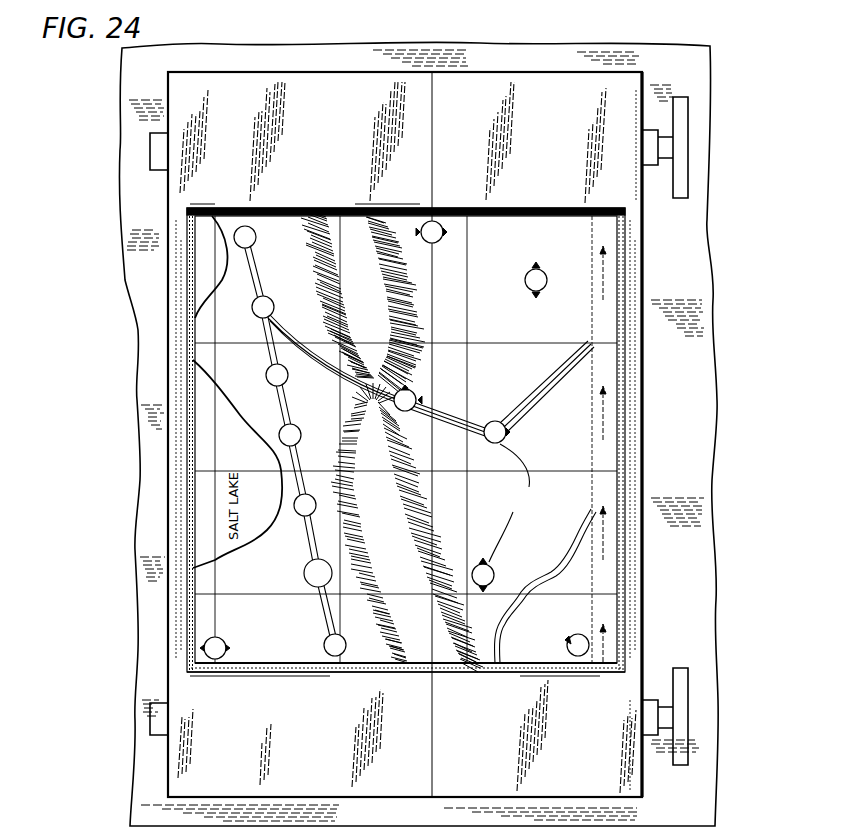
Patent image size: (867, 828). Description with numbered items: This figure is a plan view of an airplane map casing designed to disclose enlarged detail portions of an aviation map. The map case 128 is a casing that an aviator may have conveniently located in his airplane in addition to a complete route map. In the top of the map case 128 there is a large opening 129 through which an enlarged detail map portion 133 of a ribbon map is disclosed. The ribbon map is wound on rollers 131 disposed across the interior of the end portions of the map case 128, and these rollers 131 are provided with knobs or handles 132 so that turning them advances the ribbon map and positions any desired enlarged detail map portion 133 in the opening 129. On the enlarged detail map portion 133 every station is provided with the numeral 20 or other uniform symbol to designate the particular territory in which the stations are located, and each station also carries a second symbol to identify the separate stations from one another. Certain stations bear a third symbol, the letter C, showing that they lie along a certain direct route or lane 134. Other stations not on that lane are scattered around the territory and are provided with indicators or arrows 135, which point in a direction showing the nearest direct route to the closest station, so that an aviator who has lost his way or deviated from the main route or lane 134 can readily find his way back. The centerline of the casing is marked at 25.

The territory numeral symbol 20 is at (394, 440).
The center fold line 25 is at (428, 779).
The map case 128 is at (405, 434).
The opening 129 is at (526, 208).
The rollers 131 is at (126, 752).
The knobs or handles 132 is at (746, 697).
The enlarged detail map portion 133 is at (578, 462).
The direct route or lane 134 is at (330, 615).
The indicators or arrows 135 is at (504, 503).